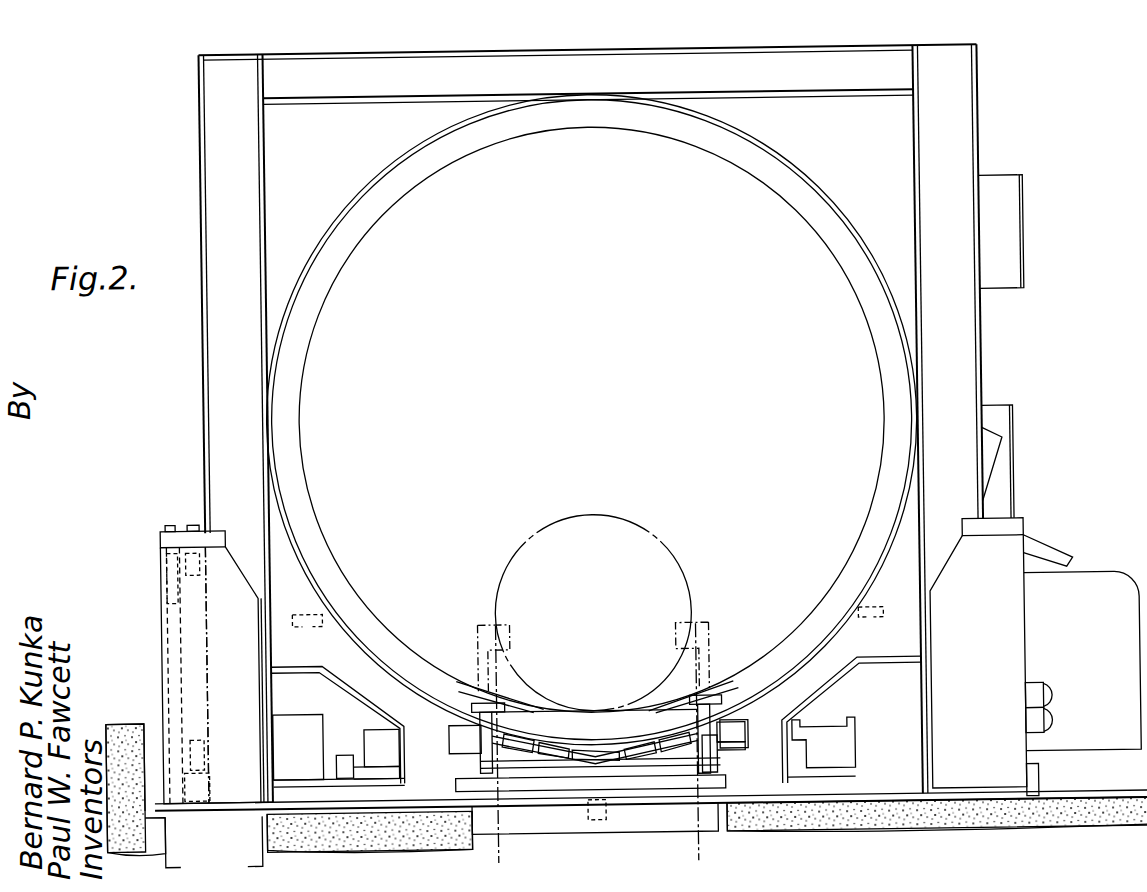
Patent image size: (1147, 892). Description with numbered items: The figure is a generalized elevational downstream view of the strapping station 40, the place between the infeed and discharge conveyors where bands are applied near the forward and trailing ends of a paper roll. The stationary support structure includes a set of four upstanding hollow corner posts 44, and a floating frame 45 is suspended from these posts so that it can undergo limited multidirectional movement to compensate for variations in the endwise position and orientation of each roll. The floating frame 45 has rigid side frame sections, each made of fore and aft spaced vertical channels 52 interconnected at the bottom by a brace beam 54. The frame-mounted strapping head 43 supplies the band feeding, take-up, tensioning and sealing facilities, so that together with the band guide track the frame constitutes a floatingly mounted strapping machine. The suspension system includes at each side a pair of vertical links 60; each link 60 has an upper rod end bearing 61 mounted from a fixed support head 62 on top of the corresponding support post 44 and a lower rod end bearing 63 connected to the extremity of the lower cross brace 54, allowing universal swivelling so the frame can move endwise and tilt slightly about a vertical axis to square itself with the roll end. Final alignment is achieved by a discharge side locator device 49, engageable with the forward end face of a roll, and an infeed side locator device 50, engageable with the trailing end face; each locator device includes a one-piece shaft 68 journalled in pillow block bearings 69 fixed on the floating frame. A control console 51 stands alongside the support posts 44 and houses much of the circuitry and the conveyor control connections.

The strapping station 40 is at (1045, 534).
The strapping head 43 is at (995, 476).
The corner post 44 is at (238, 705).
The floating frame 45 is at (988, 95).
The discharge side locator device 49 is at (720, 623).
The infeed side locator device 50 is at (714, 694).
The control console 51 is at (1056, 649).
The vertical channel 52 is at (221, 123).
The brace beam 54 is at (207, 796).
The vertical link 60 is at (195, 612).
The upper rod end bearing 61 is at (172, 572).
The support head 62 is at (211, 526).
The lower rod end bearing 63 is at (203, 765).
The shaft 68 is at (511, 758).
The pillow block bearing 69 is at (340, 752).